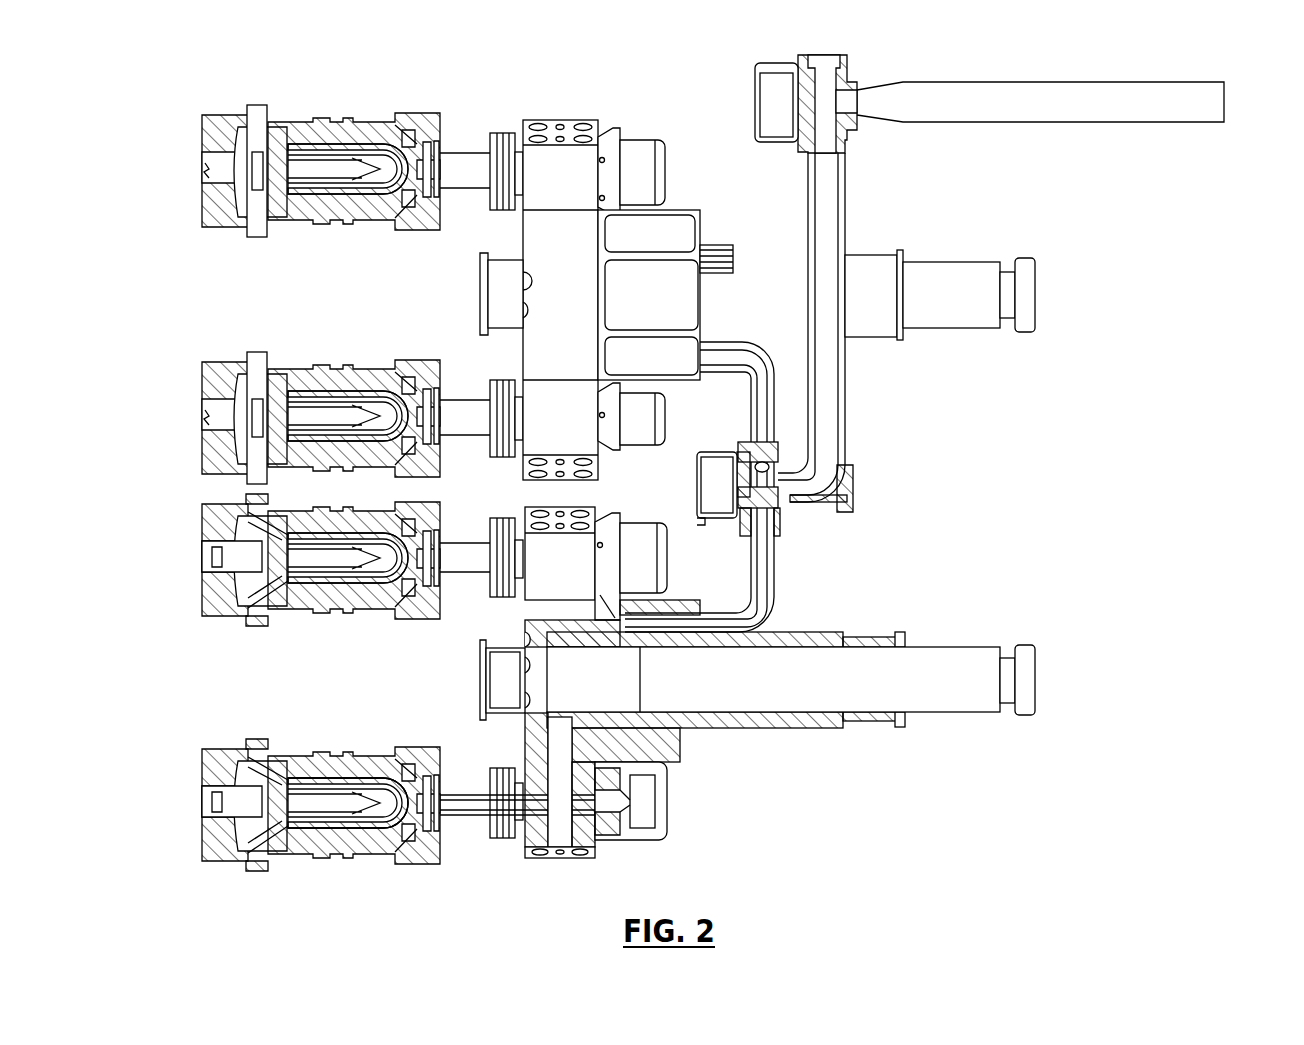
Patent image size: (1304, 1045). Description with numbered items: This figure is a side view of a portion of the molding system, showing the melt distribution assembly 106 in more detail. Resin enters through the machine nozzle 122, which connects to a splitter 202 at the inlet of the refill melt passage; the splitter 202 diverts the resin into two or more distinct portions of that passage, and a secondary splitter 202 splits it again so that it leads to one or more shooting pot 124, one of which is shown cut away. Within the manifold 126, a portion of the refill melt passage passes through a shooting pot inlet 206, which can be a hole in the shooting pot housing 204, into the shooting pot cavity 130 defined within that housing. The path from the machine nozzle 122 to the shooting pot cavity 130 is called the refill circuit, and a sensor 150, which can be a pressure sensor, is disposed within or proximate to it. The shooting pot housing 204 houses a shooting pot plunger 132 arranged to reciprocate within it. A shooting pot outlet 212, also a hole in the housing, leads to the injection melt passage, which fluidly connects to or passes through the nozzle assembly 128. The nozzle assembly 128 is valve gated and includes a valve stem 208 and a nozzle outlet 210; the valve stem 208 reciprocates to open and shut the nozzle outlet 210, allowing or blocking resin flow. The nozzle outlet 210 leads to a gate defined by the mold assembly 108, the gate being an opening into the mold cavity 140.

The melt distribution assembly 106 is at (1088, 466).
The mold assembly 108 is at (316, 106).
The machine nozzle 122 is at (1153, 103).
The shooting pot 124 is at (948, 345).
The manifold 126 is at (770, 585).
The nozzle assembly 128 is at (518, 833).
The shooting pot cavity 130 is at (565, 675).
The shooting pot plunger 132 is at (985, 320).
The mold cavity 140 is at (306, 843).
The sensor 150 is at (720, 247).
The splitter 202 is at (848, 76).
The shooting pot housing 204 is at (827, 720).
The shooting pot inlet 206 is at (613, 653).
The valve stem 208 is at (594, 812).
The nozzle outlet 210 is at (410, 817).
The shooting pot outlet 212 is at (557, 720).